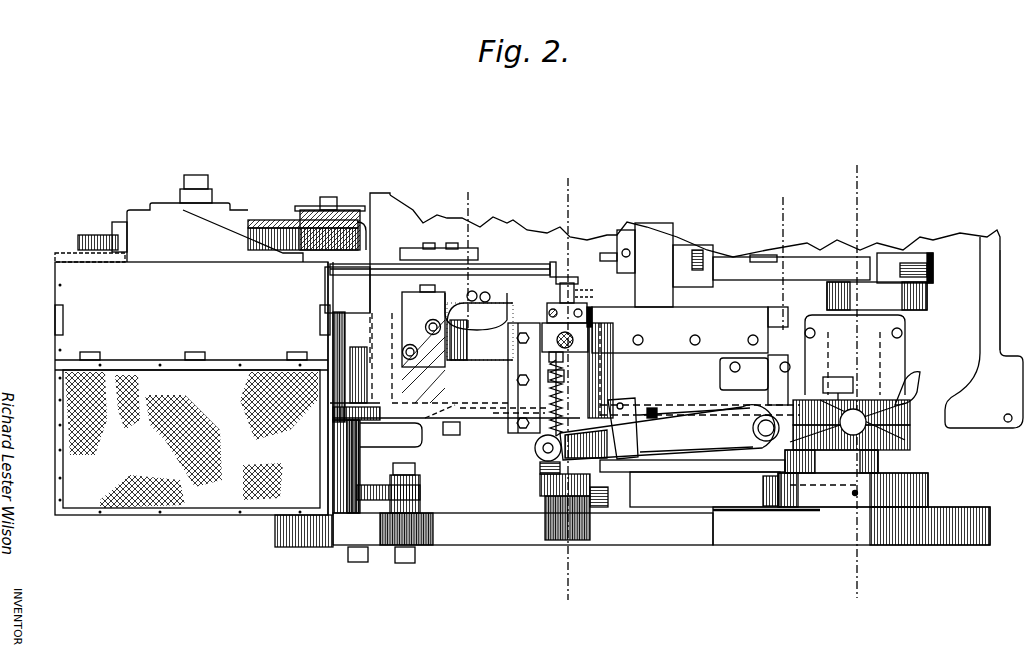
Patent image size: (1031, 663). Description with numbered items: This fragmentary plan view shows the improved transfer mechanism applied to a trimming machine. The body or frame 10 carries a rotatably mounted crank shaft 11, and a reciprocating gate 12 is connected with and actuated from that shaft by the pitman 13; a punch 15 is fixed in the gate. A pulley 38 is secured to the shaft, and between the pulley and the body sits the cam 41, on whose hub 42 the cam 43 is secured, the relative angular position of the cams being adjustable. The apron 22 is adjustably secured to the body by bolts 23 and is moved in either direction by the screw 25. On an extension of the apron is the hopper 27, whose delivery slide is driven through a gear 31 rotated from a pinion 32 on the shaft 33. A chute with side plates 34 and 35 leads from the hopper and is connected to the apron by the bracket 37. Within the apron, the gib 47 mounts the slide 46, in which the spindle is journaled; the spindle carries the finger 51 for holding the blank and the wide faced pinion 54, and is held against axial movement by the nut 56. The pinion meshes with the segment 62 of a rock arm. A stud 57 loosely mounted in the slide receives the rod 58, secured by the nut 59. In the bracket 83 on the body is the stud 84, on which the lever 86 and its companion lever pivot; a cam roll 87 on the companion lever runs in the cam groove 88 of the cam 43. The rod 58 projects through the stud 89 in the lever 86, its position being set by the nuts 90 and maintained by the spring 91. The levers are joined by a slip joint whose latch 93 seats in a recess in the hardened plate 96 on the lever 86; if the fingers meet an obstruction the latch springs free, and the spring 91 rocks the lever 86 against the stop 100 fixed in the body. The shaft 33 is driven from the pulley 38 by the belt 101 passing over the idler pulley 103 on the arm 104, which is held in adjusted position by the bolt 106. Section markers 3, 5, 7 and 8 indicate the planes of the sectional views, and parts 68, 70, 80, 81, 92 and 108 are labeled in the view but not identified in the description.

The section line 3- 3 is at (576, 183).
The section line 5- 5 is at (648, 357).
The section line 7- 7 is at (468, 172).
The section line 8- 8 is at (857, 163).
The body 10 is at (706, 311).
The crank shaft 11 is at (880, 281).
The reciprocating gate 12 is at (662, 245).
The pitman 13 is at (784, 268).
The punch 15 is at (616, 247).
The apron 22 is at (480, 351).
The bolts 23 is at (453, 436).
The screw 25 is at (675, 409).
The hopper 27 is at (130, 517).
The gear 31 is at (78, 240).
The pinion 32 is at (320, 258).
The shaft 33 is at (342, 205).
The side plate 34 is at (363, 276).
The side plate 35 is at (402, 258).
The bracket 37 is at (423, 326).
The pulley 38 is at (744, 546).
The cam 41 is at (928, 487).
The hub 42 is at (880, 465).
The cam 43 is at (910, 410).
The slide 46 is at (605, 340).
The gib 47 is at (509, 343).
The finger 51 is at (568, 290).
The wide faced pinion 54 is at (590, 530).
The nut 56 is at (590, 478).
The stud 57 is at (598, 328).
The rod 58 is at (566, 394).
The nut 59 is at (555, 352).
The segment 62 is at (608, 497).
The support 68 is at (770, 484).
The plate 70 is at (716, 471).
The stop 80 is at (591, 307).
The bracket 81 is at (547, 311).
The bracket 83 is at (720, 376).
The stud 84 is at (750, 433).
The lever 86 is at (657, 433).
The cam roll 87 is at (913, 388).
The cam groove 88 is at (905, 435).
The stud 89 is at (540, 455).
The nuts 90 is at (540, 478).
The spring 91 is at (545, 410).
The nut 92 is at (548, 376).
The latch 93 is at (650, 408).
The plate 96 is at (696, 451).
The stop 100 is at (833, 393).
The belt 101 is at (510, 537).
The idler pulley 103 is at (400, 540).
The arm 104 is at (420, 493).
The bolt 106 is at (357, 562).
The block 108 is at (287, 548).